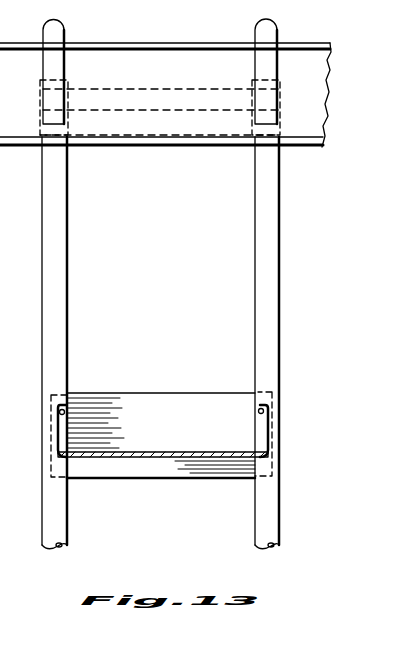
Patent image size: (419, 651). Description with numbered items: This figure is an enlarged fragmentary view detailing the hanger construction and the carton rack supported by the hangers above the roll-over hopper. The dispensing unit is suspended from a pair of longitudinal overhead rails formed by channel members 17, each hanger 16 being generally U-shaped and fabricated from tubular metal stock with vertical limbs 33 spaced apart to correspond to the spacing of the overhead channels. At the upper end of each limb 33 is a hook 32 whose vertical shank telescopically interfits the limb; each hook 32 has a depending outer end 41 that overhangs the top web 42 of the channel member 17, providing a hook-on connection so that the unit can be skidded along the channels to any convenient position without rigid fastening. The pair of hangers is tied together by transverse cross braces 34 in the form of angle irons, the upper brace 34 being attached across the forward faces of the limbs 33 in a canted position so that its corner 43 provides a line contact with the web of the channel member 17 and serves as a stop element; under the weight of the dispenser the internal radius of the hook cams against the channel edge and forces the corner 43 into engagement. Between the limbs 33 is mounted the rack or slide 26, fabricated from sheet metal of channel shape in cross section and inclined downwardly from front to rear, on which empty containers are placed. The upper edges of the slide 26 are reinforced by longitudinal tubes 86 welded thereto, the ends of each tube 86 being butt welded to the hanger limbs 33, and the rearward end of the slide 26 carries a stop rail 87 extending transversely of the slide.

The hanger 16 is at (179, 343).
The channel member 17 is at (308, 120).
The rack or slide 26 is at (142, 452).
The hook 32 is at (54, 38).
The vertical limb 33 is at (68, 233).
The cross brace 34 is at (170, 89).
The depending outer end 41 is at (52, 102).
The top web 42 is at (195, 46).
The corner 43 is at (113, 110).
The longitudinal tube 86 is at (66, 413).
The stop rail 87 is at (195, 403).